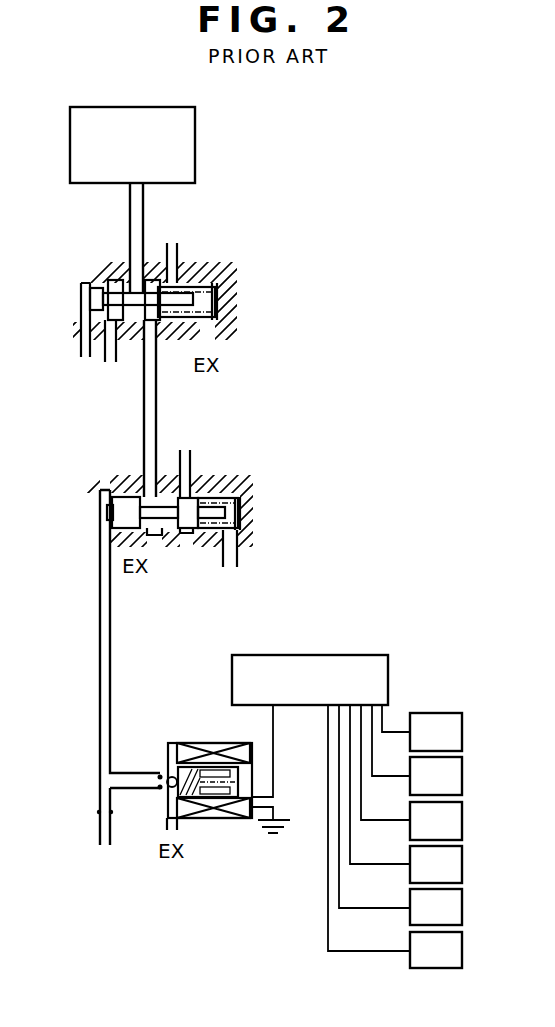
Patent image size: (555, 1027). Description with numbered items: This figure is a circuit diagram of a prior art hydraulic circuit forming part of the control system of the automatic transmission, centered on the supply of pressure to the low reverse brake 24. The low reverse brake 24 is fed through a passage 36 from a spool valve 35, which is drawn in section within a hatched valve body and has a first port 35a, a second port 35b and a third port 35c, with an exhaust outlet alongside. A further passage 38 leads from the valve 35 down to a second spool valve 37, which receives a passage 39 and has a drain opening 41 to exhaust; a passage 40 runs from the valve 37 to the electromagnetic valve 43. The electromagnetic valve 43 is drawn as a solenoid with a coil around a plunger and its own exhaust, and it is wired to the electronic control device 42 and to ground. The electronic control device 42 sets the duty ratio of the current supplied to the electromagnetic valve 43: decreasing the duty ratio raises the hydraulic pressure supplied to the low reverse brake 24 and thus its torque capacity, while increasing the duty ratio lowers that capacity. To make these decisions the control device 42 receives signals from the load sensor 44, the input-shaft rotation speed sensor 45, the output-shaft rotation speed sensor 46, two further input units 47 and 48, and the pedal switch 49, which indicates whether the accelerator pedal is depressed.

The low reverse brake 24 is at (185, 107).
The oil passage 36 is at (145, 210).
The shift valve 35 is at (232, 272).
The valve port 35a is at (81, 345).
The valve port 35b is at (177, 247).
The valve port 35c is at (108, 346).
The oil passage 38 is at (157, 410).
The control valve 37 is at (258, 490).
The oil passage 39 is at (190, 462).
The drain port 41 is at (165, 535).
The oil passage 40 is at (98, 641).
The electronic control device 42 is at (365, 655).
The electromagnetic valve 43 is at (200, 743).
The load sensor 44 is at (462, 733).
The input-shaft rotation speed sensor 45 is at (462, 777).
The output-shaft rotation speed sensor 46 is at (462, 821).
The sensor 47 is at (462, 865).
The sensor 48 is at (462, 907).
The pedal switch 49 is at (462, 950).